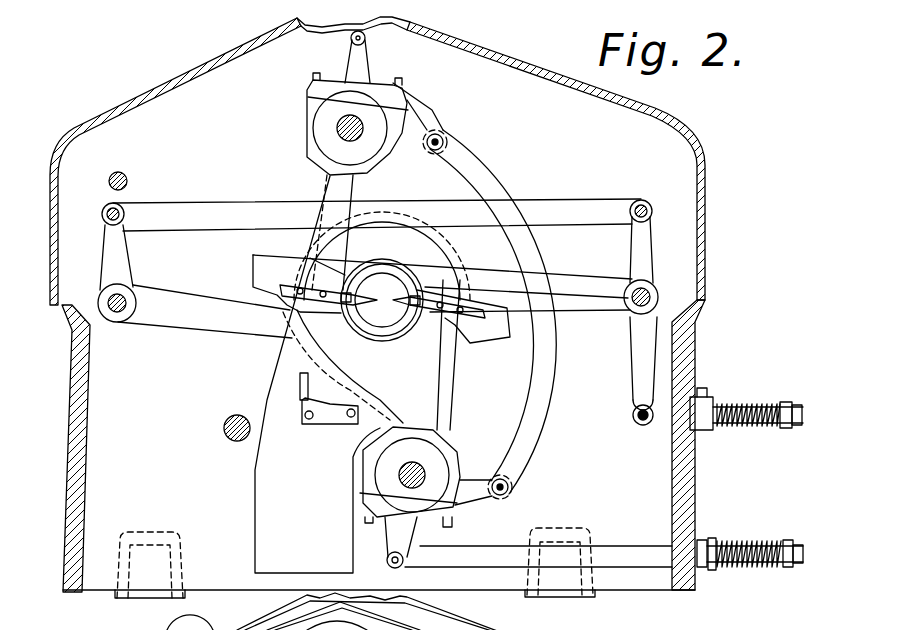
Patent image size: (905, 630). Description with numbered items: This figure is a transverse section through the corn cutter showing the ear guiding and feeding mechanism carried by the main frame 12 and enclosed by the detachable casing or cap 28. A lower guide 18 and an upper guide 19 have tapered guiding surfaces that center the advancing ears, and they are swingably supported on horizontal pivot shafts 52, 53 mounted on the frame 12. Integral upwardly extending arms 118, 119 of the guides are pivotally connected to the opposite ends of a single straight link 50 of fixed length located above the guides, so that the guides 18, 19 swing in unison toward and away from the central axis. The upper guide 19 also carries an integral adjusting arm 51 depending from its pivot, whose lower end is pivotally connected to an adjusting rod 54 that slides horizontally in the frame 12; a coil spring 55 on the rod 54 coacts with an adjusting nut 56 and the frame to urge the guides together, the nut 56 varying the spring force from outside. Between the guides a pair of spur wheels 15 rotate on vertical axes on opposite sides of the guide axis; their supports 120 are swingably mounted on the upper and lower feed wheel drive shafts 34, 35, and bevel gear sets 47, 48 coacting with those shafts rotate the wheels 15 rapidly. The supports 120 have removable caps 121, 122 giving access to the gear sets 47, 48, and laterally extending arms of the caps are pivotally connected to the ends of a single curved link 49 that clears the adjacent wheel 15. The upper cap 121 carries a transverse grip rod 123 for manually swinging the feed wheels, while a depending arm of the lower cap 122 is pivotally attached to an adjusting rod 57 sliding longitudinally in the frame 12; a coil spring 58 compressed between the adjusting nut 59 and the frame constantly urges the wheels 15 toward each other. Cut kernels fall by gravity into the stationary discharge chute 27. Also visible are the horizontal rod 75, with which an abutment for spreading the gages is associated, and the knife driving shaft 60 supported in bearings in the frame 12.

The main frame 12 is at (84, 460).
The spur wheels 15 is at (302, 292).
The lower guide 18 is at (246, 318).
The upper guide 19 is at (548, 280).
The discharge chute 27 is at (262, 500).
The cap 28 is at (180, 78).
The upper feed wheel drive shaft 34 is at (340, 126).
The lower feed wheel drive shaft 35 is at (425, 468).
The bevel gear set 47 is at (368, 146).
The bevel gear set 48 is at (365, 450).
The curved link 49 is at (548, 402).
The link 50 is at (575, 202).
The adjusting arm 51 is at (640, 353).
The pivot shaft 52 is at (114, 322).
The pivot shaft 53 is at (658, 297).
The adjusting rod 54 is at (660, 430).
The coil spring 55 is at (738, 408).
The adjusting nut 56 is at (786, 424).
The adjusting rod 57 is at (632, 552).
The coil spring 58 is at (776, 540).
The adjusting nut 59 is at (800, 562).
The knife driving shaft 60 is at (224, 428).
The horizontal rod 75 is at (108, 182).
The arm 118 is at (118, 262).
The arm 119 is at (643, 242).
The feed wheel supports 120 is at (345, 185).
The upper cap 121 is at (410, 100).
The lower cap 122 is at (410, 541).
The grip rod 123 is at (366, 38).